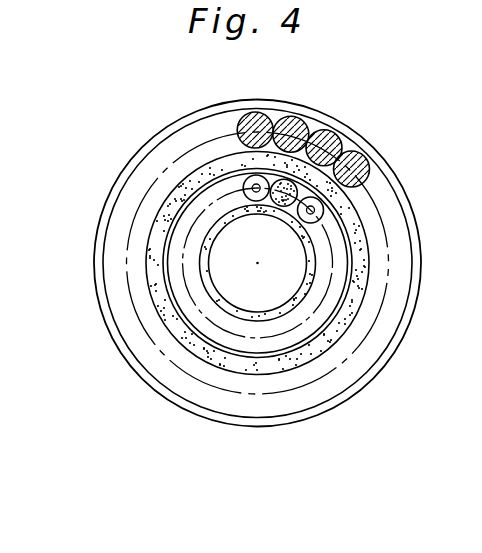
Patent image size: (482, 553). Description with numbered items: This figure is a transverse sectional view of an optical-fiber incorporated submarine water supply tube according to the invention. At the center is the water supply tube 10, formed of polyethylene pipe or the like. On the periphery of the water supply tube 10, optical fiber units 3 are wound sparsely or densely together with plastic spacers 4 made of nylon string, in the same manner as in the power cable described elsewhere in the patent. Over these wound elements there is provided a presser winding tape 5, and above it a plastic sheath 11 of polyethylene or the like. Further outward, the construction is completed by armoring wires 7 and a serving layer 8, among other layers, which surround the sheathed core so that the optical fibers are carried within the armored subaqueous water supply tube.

The optical fiber unit 3 is at (238, 171).
The plastic spacer 4 is at (300, 189).
The presser winding tape 5 is at (177, 208).
The armoring wire 7 is at (340, 138).
The serving layer 8 is at (157, 397).
The water supply tube 10 is at (298, 298).
The plastic sheath 11 is at (170, 337).